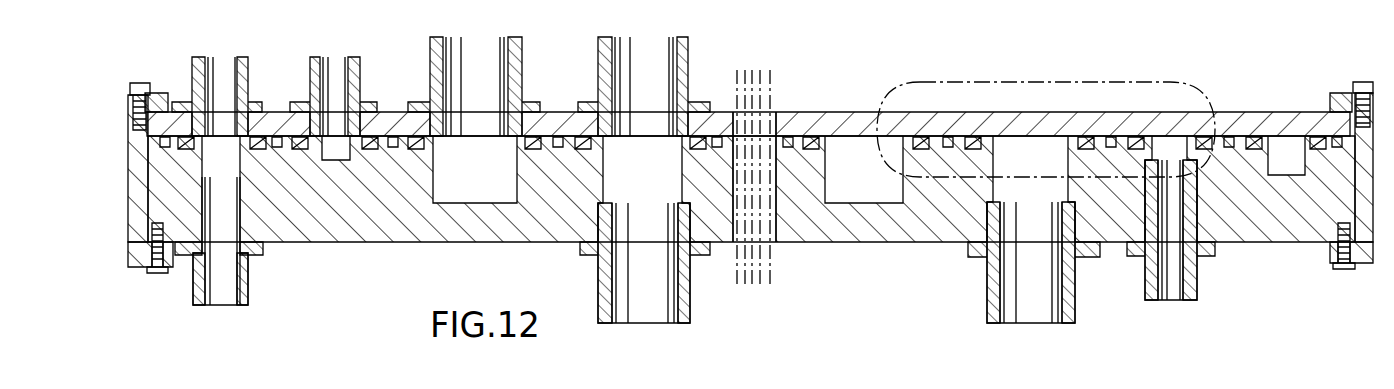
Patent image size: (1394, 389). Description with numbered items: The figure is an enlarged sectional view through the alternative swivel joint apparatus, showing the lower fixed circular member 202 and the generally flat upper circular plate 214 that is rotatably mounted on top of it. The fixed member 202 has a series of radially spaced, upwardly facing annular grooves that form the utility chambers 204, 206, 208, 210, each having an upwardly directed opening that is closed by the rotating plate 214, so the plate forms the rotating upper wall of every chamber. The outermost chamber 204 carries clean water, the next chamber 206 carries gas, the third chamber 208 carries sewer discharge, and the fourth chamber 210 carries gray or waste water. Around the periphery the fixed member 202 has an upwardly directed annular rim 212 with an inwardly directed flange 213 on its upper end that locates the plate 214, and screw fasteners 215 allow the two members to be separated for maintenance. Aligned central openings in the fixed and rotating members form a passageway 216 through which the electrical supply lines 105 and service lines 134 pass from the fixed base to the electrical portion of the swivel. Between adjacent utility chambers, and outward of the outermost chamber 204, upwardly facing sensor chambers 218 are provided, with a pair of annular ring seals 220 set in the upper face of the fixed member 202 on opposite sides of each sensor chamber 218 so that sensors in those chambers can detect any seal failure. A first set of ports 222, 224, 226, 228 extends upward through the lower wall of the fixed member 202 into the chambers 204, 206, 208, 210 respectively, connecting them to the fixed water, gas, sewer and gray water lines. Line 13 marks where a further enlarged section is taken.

The line 13— 13 is at (1013, 82).
The electrical supply lines 105 is at (813, 198).
The service lines 134 is at (778, 268).
The fixed circular member 202 is at (875, 235).
The outermost utility chamber 204 is at (218, 150).
The gas chamber 206 is at (334, 147).
The sewer chamber 208 is at (483, 152).
The gray water chamber 210 is at (665, 148).
The annular peripheral rim 212 is at (129, 108).
The inwardly directed flange 213 is at (158, 92).
The upper circular plate 214 is at (916, 122).
The screw fasteners 215 is at (144, 106).
The passageway 216 is at (763, 152).
The sensor chamber 218 is at (1337, 137).
The annular ring seals 220 is at (1150, 175).
The first port 222 is at (227, 222).
The second port 224 is at (1196, 258).
The third port 226 is at (1027, 233).
The fourth port 228 is at (625, 227).